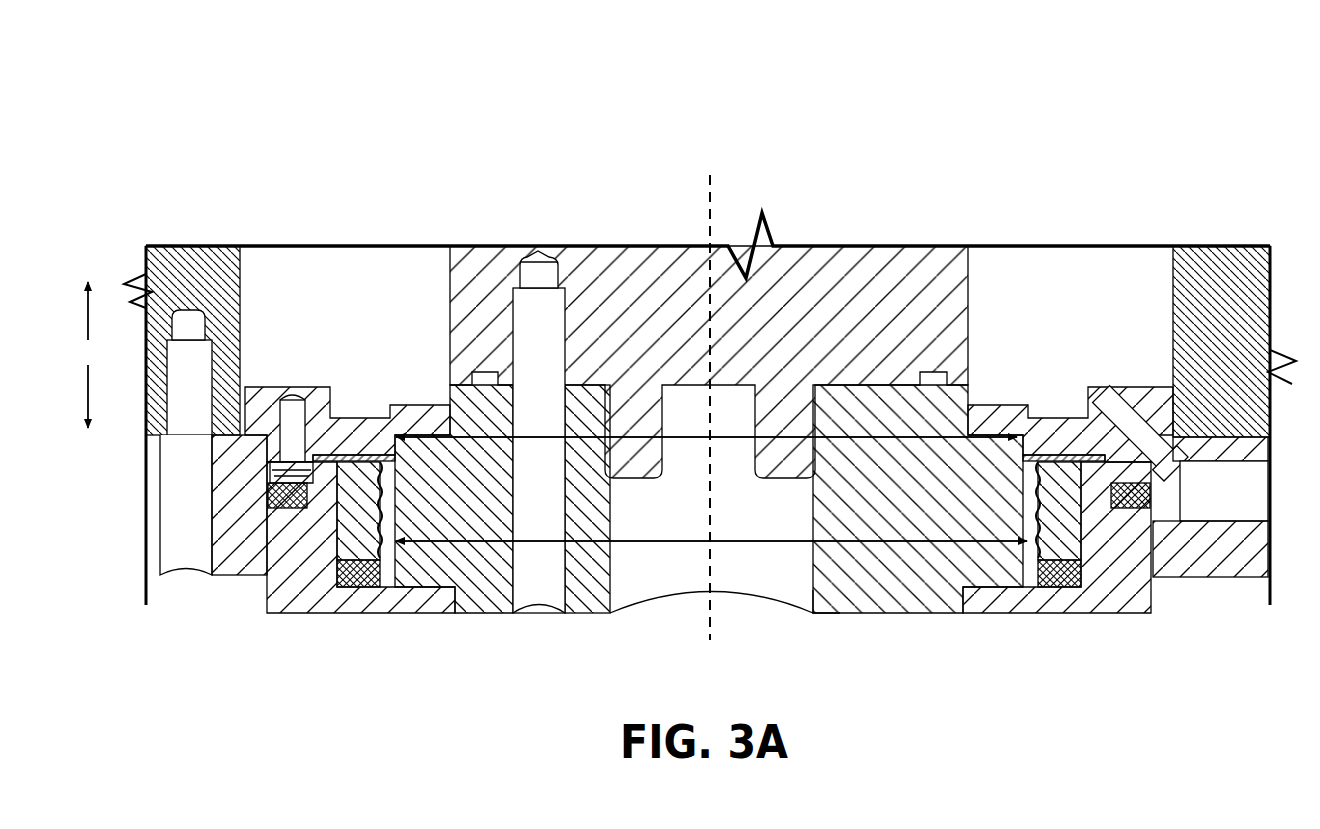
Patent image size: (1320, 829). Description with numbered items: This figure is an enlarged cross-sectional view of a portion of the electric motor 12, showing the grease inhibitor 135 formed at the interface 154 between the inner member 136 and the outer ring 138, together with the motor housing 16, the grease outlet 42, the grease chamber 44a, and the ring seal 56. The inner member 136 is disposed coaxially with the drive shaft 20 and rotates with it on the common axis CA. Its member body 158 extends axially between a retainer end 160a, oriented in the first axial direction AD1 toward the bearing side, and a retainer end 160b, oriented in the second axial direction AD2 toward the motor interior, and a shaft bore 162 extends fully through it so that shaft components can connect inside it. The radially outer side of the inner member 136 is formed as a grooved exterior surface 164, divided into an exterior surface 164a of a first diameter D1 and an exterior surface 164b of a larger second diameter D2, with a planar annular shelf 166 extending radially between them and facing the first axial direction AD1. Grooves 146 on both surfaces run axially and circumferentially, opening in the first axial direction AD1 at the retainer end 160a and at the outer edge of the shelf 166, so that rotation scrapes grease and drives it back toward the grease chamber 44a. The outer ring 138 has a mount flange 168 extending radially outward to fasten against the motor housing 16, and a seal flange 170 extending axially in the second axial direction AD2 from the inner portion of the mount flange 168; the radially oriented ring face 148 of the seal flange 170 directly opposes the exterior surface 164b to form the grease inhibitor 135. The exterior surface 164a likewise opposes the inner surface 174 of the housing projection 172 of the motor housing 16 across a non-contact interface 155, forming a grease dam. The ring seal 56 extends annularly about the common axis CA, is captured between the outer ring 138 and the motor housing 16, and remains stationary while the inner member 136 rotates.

The motor 12 is at (268, 128).
The motor housing 16 is at (126, 455).
The drive shaft 20 is at (636, 265).
The grease outlet 42 is at (1254, 534).
The grease chamber 44a is at (1180, 305).
The ring seal 56 is at (1281, 370).
The grease inhibitor 135 is at (398, 558).
The inner member 136 is at (478, 612).
The outer ring 138 is at (330, 443).
The grooves 146 is at (398, 490).
The ring face 148 is at (350, 542).
The interface 154 is at (366, 558).
The interface 155 is at (378, 410).
The member body 158 is at (1128, 587).
The member end 160a is at (1173, 387).
The member end 160b is at (915, 614).
The shaft bore 162 is at (822, 598).
The exterior surface 164 is at (364, 470).
The exterior surface 164a is at (1041, 456).
The exterior surface 164b is at (1070, 589).
The shelf 166 is at (1035, 449).
The mount flange 168 is at (210, 556).
The seal flange 170 is at (300, 512).
The housing projection 172 is at (1092, 470).
The inner surface 174 is at (1026, 421).
The first axial direction AD1 is at (88, 330).
The second axial direction AD2 is at (88, 394).
The common axis CA is at (708, 212).
The first diameter D1 is at (792, 470).
The second diameter D2 is at (634, 542).